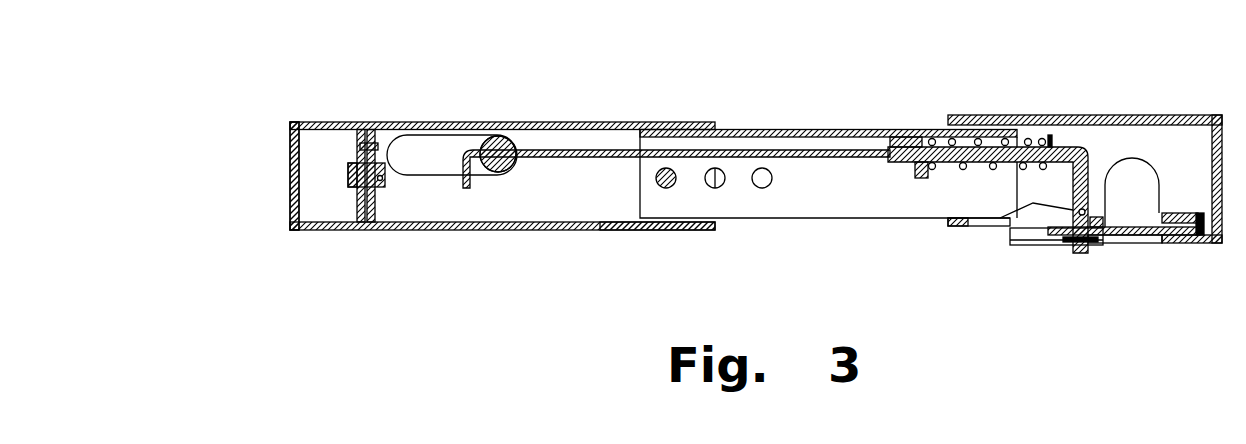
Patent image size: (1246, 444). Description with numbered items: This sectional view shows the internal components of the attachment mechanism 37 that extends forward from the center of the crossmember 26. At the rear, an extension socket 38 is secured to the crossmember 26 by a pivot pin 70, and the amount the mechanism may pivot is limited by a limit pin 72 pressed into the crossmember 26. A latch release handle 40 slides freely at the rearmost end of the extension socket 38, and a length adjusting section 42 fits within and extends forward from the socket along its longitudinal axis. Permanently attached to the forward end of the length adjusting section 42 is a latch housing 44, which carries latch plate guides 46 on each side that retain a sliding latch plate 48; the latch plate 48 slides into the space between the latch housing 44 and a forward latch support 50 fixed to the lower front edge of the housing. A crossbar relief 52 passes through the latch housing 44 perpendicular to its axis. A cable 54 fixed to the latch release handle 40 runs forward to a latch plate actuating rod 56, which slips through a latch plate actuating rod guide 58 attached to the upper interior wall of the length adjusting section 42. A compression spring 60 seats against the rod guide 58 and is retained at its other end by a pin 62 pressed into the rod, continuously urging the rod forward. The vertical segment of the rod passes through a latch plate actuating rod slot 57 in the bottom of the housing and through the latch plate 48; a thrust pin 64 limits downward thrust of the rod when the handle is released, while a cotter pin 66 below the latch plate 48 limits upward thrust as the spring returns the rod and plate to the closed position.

The crossmember 26 is at (290, 171).
The attachment mechanism 37 is at (687, 234).
The extension socket 38 is at (404, 231).
The latch release handle 40 is at (498, 165).
The length adjusting section 42 is at (750, 130).
The latch housing 44 is at (1183, 117).
The latch plate guide 46 is at (1025, 243).
The latch plate 48 is at (1133, 238).
The forward latch support 50 is at (1180, 236).
The crossbar relief 52 is at (1130, 158).
The cable 54 is at (553, 157).
The latch plate actuating rod 56 is at (893, 156).
The latch plate actuating rod slot 57 is at (1008, 222).
The latch plate actuating rod guide 58 is at (927, 178).
The compression spring 60 is at (948, 137).
The pin 62 is at (1050, 135).
The thrust pin 64 is at (1000, 221).
The cotter pin 66 is at (1066, 242).
The pivot pin 70 is at (350, 180).
The limit pin 72 is at (369, 141).